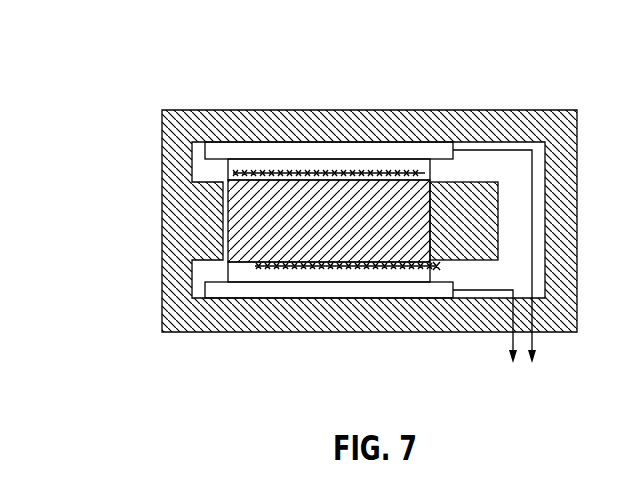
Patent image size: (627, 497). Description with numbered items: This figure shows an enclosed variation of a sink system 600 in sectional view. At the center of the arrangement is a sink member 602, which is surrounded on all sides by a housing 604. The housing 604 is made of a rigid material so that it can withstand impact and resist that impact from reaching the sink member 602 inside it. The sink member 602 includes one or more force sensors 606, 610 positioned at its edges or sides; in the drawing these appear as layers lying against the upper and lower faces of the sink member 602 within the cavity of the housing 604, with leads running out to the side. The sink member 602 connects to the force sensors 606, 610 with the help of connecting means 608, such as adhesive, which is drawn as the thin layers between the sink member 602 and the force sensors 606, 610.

The sink system 600 is at (138, 50).
The sink member 602 is at (307, 243).
The housing 604 is at (446, 128).
The force sensor 606 is at (353, 150).
The connecting means 608 is at (275, 176).
The force sensor 610 is at (548, 343).